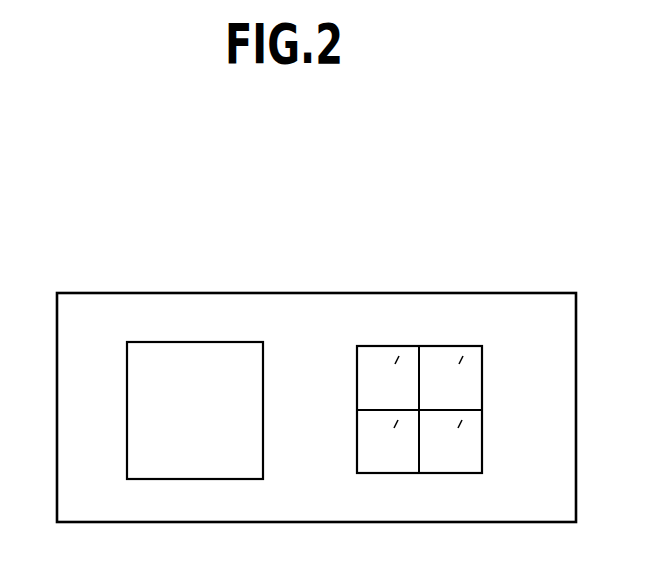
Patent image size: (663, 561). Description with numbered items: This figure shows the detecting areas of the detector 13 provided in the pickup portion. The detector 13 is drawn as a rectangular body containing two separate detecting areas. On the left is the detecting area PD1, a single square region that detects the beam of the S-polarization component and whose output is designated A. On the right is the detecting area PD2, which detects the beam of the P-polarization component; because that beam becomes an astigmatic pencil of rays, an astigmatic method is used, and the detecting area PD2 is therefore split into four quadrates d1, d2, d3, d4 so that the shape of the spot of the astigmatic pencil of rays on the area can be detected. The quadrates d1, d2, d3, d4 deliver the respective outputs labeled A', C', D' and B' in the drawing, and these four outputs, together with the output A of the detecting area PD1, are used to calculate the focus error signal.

The detector 13 is at (418, 273).
The detecting area PD1 is at (186, 331).
The detecting area PD2 is at (470, 337).
The quadrate d1 is at (358, 367).
The quadrate d2 is at (475, 465).
The quadrate d3 is at (480, 388).
The quadrate d4 is at (358, 458).